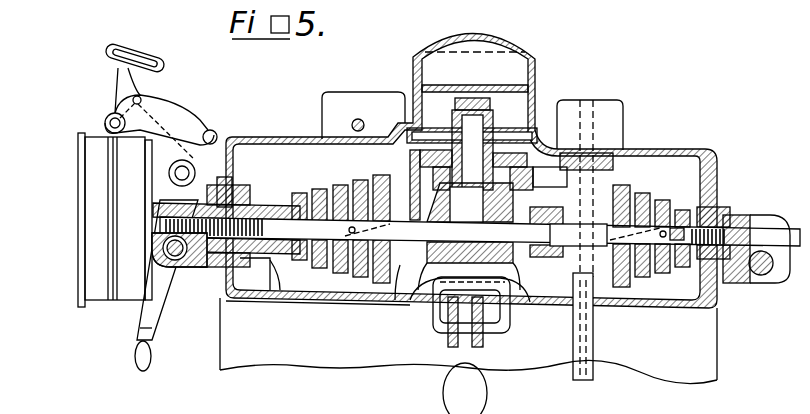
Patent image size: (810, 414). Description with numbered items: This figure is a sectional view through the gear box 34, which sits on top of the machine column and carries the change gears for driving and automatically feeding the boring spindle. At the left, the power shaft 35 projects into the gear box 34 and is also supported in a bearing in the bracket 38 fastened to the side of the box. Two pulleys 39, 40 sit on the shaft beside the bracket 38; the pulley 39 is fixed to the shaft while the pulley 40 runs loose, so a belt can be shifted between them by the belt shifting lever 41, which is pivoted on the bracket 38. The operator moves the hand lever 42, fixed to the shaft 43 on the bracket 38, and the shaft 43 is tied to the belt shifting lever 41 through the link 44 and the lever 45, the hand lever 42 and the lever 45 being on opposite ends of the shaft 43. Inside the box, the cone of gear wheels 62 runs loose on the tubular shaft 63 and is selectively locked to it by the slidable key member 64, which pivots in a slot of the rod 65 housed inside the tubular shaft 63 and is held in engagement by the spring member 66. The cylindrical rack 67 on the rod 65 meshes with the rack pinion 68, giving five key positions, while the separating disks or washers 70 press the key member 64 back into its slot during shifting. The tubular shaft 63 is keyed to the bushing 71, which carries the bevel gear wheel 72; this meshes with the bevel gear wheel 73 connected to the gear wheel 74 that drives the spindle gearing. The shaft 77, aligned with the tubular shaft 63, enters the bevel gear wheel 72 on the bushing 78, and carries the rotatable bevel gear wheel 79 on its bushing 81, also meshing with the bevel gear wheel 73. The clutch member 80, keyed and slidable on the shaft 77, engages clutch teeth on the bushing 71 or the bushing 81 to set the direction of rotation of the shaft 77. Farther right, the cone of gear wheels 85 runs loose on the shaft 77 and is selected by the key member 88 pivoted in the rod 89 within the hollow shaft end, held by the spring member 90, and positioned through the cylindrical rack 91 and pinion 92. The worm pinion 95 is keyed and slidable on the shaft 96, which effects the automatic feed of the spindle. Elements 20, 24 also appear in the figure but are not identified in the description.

The pin 20 is at (480, 347).
The pin 24 is at (455, 347).
The gear box 34 is at (645, 172).
The power shaft 35 is at (89, 240).
The bracket 38 is at (168, 108).
The pulley 39 is at (84, 300).
The pulley 40 is at (126, 295).
The belt shifting lever 41 is at (130, 56).
The hand lever 42 is at (151, 352).
The shaft 43 is at (180, 162).
The link 44 is at (212, 129).
The lever 45 is at (236, 150).
The cone of gear wheels 62 is at (297, 193).
The tubular shaft 63 is at (258, 283).
The key member 64 is at (383, 186).
The rod 65 is at (278, 272).
The spring member 66 is at (318, 190).
The cylindrical rack 67 is at (195, 267).
The rack pinion 68 is at (178, 270).
The separating disks or washers 70 is at (362, 183).
The bushing 71 is at (395, 272).
The bevel gear wheel 72 is at (428, 272).
The bevel gear wheel 73 is at (540, 175).
The gear wheel 74 is at (430, 130).
The shaft 77 is at (573, 300).
The bushing 78 is at (440, 290).
The bevel gear wheel 79 is at (518, 290).
The clutch member 80 is at (472, 248).
The bushing 81 is at (495, 300).
The cone of gear wheels 85 is at (643, 278).
The key member 88 is at (620, 200).
The rod 89 is at (677, 226).
The spring member 90 is at (664, 258).
The cylindrical rack 91 is at (770, 228).
The pinion 92 is at (758, 276).
The worm pinion 95 is at (578, 110).
The shaft 96 is at (595, 120).